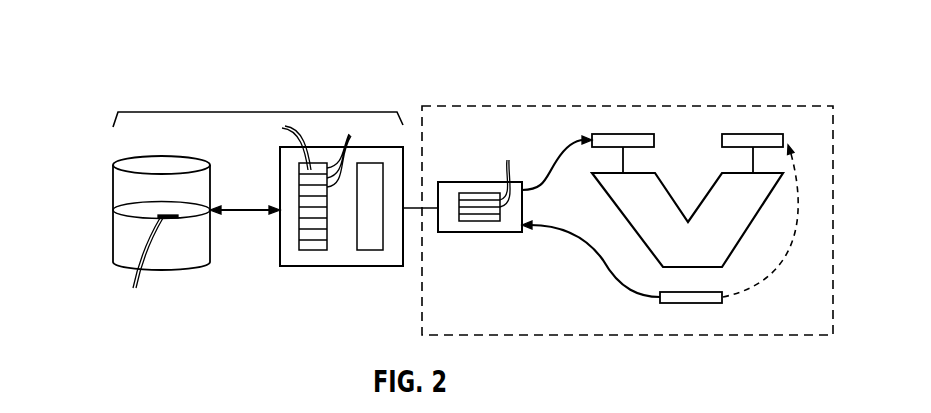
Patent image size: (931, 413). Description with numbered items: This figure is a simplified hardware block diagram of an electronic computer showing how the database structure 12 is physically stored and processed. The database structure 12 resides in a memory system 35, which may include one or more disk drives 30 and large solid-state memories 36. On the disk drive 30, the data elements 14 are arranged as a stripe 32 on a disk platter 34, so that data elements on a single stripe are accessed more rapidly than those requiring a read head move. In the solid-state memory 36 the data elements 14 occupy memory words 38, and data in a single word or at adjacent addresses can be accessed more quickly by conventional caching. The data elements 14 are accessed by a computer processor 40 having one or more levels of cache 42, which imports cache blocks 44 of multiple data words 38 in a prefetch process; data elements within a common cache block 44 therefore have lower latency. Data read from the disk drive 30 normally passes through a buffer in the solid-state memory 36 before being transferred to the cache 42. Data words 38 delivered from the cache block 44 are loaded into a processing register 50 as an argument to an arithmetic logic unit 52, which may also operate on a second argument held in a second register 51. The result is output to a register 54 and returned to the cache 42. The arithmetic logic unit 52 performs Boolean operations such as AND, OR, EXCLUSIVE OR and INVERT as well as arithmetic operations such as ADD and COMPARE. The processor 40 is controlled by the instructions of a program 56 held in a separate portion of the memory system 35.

The database structure 12 is at (104, 186).
The data elements 14 is at (216, 216).
The disk drive 30 is at (113, 238).
The stripe 32 is at (176, 218).
The disk platter 34 is at (190, 211).
The memory system 35 is at (258, 112).
The solid-state memory 36 is at (307, 266).
The memory words 38 is at (419, 164).
The computer processor 40 is at (667, 106).
The cache 42 is at (472, 182).
The cache block 44 is at (475, 232).
The processing register 50 is at (620, 134).
The second register 51 is at (752, 134).
The arithmetic logic unit 52 is at (745, 210).
The register 54 is at (723, 303).
The program 56 is at (377, 238).